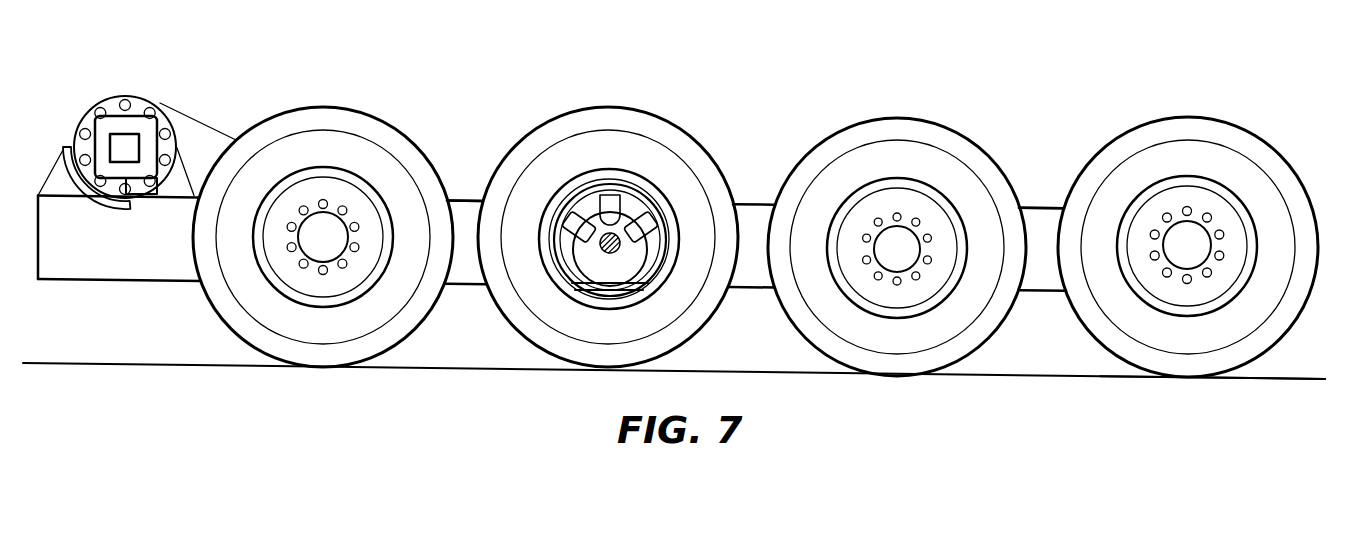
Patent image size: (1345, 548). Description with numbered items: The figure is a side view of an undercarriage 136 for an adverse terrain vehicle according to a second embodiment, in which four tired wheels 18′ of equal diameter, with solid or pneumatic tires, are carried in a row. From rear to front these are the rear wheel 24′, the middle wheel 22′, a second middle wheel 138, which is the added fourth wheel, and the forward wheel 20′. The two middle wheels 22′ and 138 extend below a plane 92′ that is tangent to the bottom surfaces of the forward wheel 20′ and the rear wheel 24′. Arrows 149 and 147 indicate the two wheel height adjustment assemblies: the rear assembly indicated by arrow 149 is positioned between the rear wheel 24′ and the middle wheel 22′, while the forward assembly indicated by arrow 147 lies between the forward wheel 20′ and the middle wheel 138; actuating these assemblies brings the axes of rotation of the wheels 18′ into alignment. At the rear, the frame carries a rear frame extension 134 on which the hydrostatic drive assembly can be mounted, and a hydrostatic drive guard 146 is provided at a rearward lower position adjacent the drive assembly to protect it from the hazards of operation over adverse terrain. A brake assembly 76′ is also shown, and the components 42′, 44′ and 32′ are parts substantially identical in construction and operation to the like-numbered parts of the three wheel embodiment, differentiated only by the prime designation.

The undercarriage 136 is at (788, 101).
The rear frame extension 134 is at (143, 350).
The plane 92′ is at (1263, 377).
The arrow 149 is at (469, 202).
The arrow 147 is at (1043, 208).
The mounting bracket 42′ is at (53, 177).
The flange bolts 44′ is at (126, 104).
The drive hub 32′ is at (143, 192).
The hydrostatic drive guard 146 is at (108, 207).
The wheels 18′ is at (368, 343).
The rear wheel 24′ is at (310, 353).
The middle wheel 22′ is at (587, 347).
The brake assembly 76′ is at (630, 213).
The fourth wheel 138 is at (883, 345).
The forward wheel 20′ is at (1168, 338).